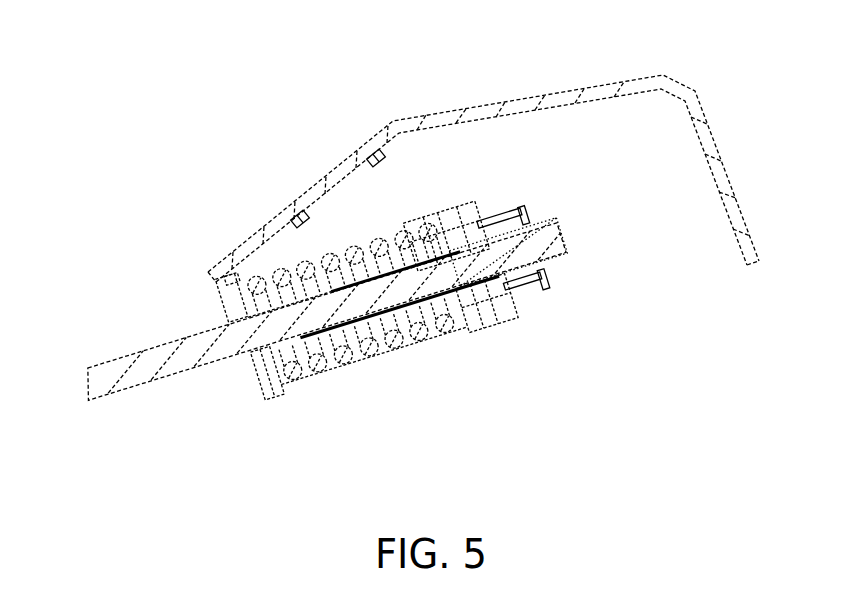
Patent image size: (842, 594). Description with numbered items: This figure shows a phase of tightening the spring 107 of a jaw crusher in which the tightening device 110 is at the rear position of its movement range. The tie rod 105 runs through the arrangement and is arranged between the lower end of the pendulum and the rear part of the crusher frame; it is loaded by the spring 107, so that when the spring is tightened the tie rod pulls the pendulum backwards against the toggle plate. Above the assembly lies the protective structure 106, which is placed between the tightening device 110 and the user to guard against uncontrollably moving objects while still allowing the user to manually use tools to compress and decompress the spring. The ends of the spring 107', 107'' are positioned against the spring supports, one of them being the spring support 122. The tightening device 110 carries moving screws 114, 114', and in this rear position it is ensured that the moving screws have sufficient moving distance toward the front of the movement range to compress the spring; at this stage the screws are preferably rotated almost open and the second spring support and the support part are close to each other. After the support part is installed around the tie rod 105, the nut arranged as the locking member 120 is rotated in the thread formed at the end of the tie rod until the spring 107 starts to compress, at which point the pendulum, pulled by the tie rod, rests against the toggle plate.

The tie rod 105 is at (123, 377).
The protective structure 106 is at (567, 97).
The spring 107 is at (369, 384).
The end of the spring 107' is at (326, 390).
The end of the spring 107'' is at (493, 362).
The tightening device 110 is at (571, 355).
The moving screw 114 is at (542, 188).
The moving screw 114' is at (580, 304).
The locking member 120 is at (517, 270).
The spring support 122 is at (273, 397).